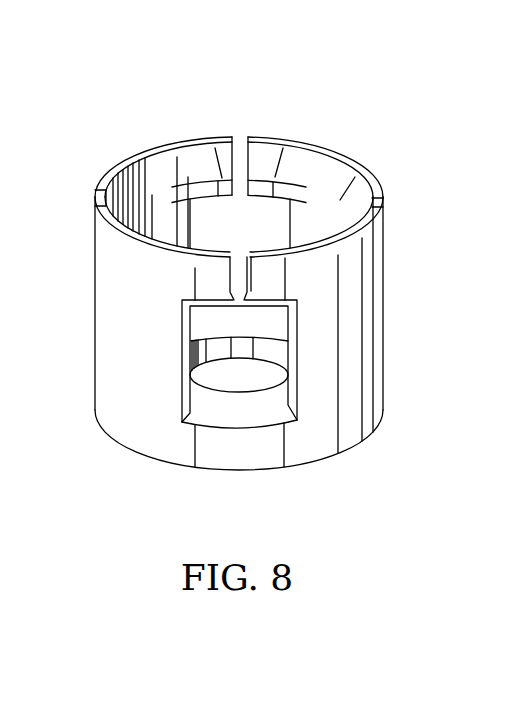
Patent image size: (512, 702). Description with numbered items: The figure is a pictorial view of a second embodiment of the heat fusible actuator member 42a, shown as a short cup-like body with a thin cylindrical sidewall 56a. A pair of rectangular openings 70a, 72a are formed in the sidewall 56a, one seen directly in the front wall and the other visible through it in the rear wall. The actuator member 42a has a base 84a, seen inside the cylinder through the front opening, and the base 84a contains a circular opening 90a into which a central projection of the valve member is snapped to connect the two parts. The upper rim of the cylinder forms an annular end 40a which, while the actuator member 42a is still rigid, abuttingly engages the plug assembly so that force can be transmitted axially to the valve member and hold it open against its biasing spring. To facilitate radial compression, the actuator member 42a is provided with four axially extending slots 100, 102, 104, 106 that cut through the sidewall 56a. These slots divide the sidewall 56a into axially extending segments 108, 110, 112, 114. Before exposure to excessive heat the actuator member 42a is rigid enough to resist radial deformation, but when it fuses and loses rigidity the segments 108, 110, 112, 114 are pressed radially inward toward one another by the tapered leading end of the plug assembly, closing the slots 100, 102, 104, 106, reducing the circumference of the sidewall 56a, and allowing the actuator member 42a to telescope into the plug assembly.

The annular end 40a is at (384, 223).
The actuator member 42a is at (283, 259).
The cylindrical sidewall 56a is at (128, 296).
The rectangular opening 70a is at (187, 393).
The rectangular opening 72a is at (190, 212).
The base 84a is at (283, 427).
The circular opening 90a is at (245, 380).
The axially extending slot 100 is at (243, 272).
The axially extending slot 102 is at (384, 198).
The axially extending slot 104 is at (240, 132).
The axially extending slot 106 is at (96, 192).
The axially extending segment 108 is at (383, 362).
The axially extending segment 110 is at (352, 150).
The axially extending segment 112 is at (150, 200).
The axially extending segment 114 is at (140, 335).